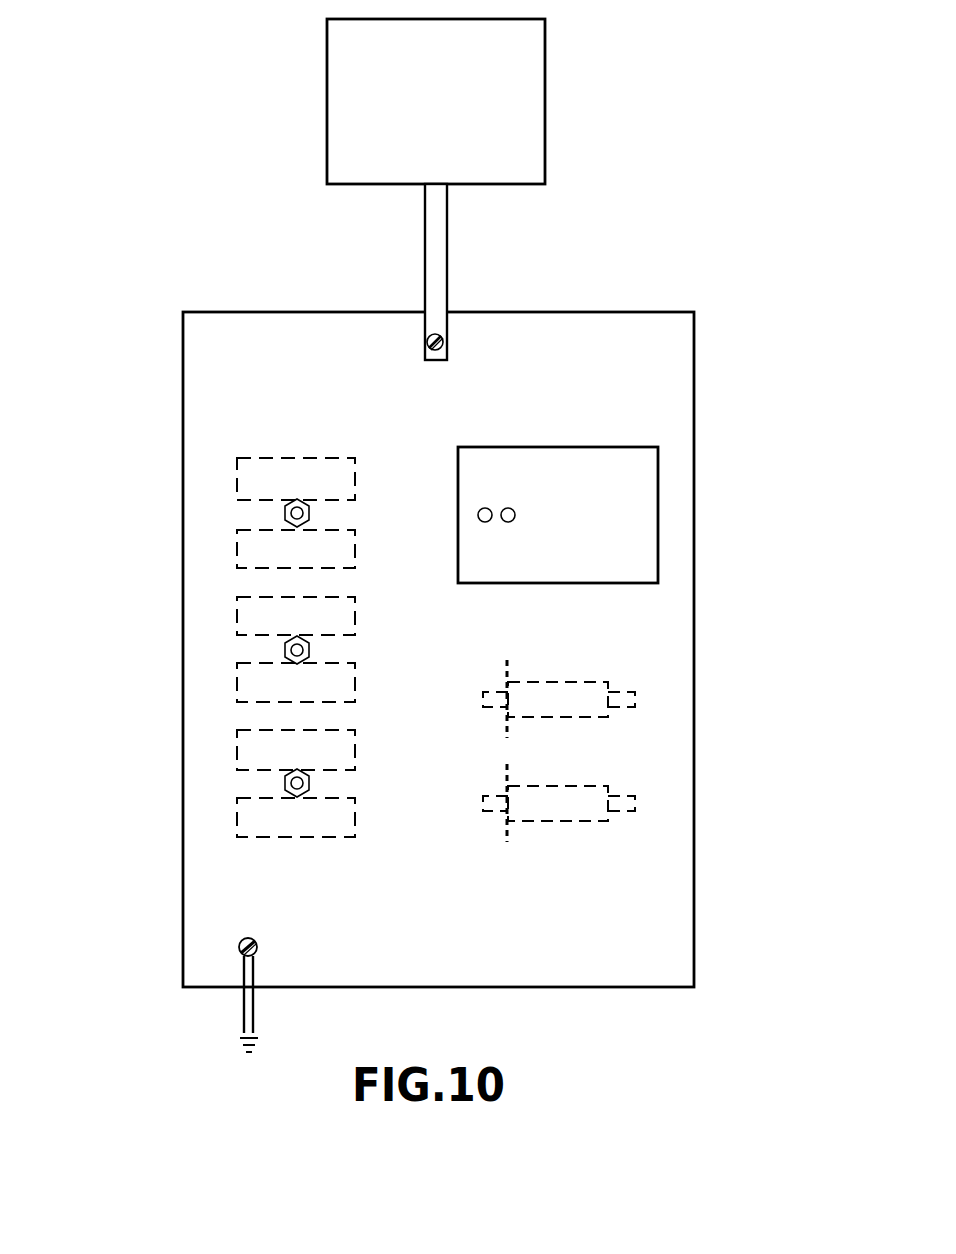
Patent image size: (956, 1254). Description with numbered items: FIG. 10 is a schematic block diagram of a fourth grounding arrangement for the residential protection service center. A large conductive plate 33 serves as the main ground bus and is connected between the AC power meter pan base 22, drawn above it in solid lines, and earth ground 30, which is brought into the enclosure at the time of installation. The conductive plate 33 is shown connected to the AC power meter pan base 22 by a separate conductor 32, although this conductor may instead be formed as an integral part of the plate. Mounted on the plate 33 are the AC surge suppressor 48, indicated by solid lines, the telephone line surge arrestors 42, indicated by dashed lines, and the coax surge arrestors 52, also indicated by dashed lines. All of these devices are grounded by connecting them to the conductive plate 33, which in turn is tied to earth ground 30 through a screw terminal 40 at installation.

The AC power meter pan base 22 is at (497, 120).
The earth ground 30 is at (242, 1014).
The separate conductor 32 is at (435, 276).
The conductive plate 33 is at (258, 360).
The grounding screw 40 is at (240, 948).
The telephone line surge arrestors 42 is at (260, 618).
The AC surge suppressor 48 is at (607, 525).
The coax surge arrestors 52 is at (580, 698).